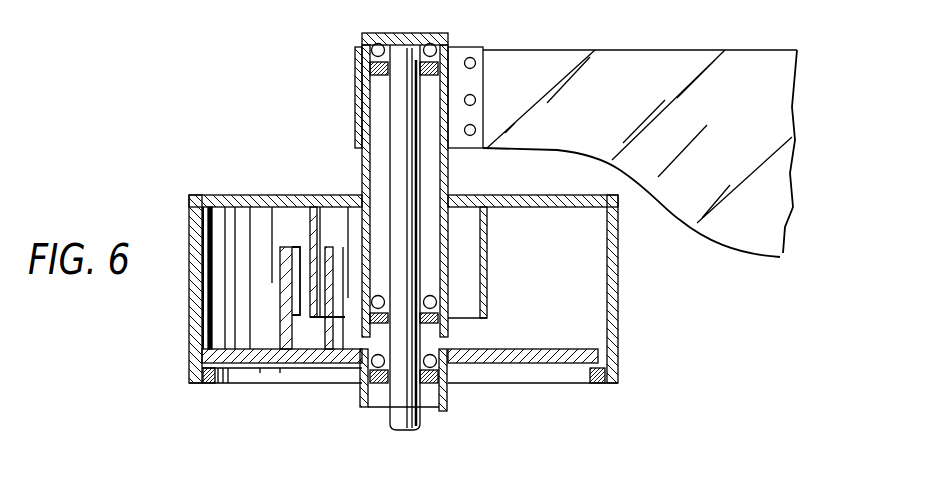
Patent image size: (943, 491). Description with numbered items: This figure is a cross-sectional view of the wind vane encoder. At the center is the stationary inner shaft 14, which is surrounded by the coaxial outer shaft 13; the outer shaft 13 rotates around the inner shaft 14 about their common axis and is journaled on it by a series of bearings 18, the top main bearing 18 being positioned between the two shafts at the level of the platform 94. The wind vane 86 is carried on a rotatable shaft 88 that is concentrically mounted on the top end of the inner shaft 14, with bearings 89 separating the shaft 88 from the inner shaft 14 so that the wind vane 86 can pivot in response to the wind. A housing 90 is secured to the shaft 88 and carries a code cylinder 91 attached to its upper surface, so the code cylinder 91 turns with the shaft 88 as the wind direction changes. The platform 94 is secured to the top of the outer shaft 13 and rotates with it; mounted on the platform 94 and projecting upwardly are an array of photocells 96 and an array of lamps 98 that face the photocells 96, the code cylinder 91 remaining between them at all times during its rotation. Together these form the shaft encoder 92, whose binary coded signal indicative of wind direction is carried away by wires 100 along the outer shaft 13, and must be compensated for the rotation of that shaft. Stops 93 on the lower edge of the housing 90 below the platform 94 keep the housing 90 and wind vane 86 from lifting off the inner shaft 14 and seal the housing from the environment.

The outer shaft 13 is at (448, 397).
The inner shaft 14 is at (396, 122).
The bearings 18 is at (360, 377).
The wind vane 86 is at (633, 50).
The rotatable shaft 88 is at (358, 170).
The bearings 89 is at (372, 45).
The housing 90 is at (618, 268).
The code cylinder 91 is at (485, 260).
The shaft encoder 92 is at (580, 308).
The stops 93 is at (212, 383).
The platform 94 is at (503, 362).
The array of photocells 96 is at (295, 297).
The array of lamps 98 is at (330, 250).
The wires 100 is at (372, 424).